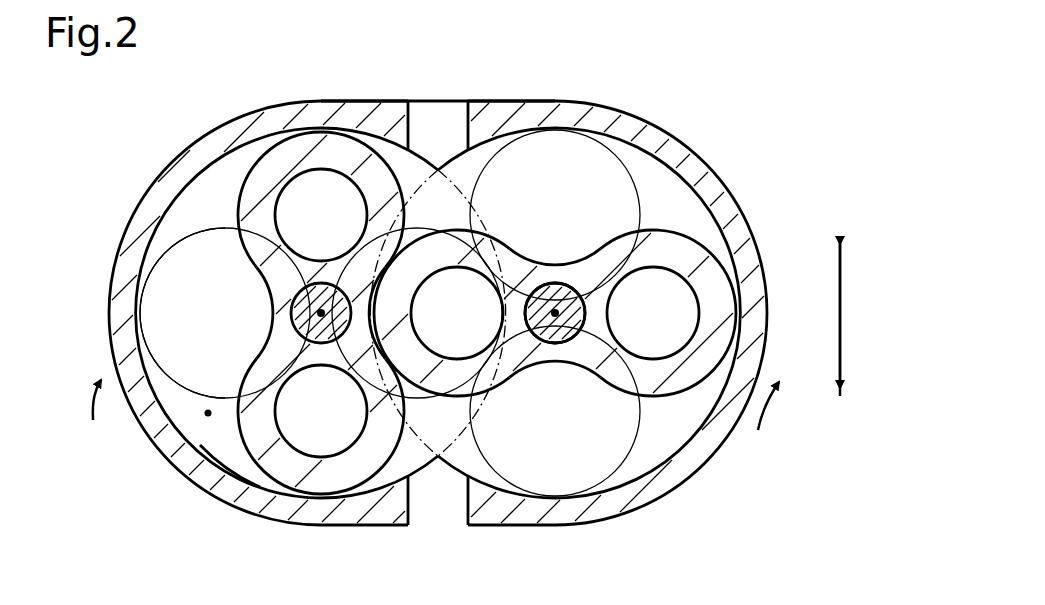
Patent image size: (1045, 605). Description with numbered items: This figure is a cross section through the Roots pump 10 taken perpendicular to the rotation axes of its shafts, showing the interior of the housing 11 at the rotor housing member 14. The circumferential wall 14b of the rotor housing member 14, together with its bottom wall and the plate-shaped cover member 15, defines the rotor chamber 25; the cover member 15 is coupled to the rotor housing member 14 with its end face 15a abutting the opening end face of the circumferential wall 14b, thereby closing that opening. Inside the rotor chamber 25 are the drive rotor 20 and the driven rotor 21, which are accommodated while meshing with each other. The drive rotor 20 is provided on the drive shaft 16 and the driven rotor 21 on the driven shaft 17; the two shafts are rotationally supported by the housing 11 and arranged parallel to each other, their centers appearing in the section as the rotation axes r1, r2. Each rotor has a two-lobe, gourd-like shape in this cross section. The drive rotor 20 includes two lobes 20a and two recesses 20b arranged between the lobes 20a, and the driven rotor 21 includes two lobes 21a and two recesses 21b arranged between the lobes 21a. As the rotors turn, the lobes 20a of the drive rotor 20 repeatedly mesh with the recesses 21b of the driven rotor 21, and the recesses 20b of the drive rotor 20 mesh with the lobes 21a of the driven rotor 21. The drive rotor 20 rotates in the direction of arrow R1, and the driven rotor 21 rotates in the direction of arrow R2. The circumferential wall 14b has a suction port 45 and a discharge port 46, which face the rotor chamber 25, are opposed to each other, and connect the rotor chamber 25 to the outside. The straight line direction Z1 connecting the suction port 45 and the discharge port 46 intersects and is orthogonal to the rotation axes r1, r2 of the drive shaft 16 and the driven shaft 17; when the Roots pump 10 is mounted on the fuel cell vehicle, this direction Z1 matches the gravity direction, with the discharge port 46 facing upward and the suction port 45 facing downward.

The Roots pump 10 is at (191, 96).
The housing 11 is at (669, 131).
The rotor housing member 14 is at (152, 187).
The circumferential wall 14b is at (116, 266).
The cover member 15 is at (662, 443).
The end face 15a is at (232, 470).
The drive shaft 16 is at (324, 343).
The driven shaft 17 is at (537, 343).
The drive rotor 20 is at (250, 192).
The lobes 20a is at (331, 131).
The recesses 20b is at (272, 309).
The driven rotor 21 is at (696, 240).
The lobes 21a is at (372, 300).
The recesses 21b is at (555, 263).
The rotor chamber 25 is at (208, 413).
The suction port 45 is at (437, 510).
The discharge port 46 is at (437, 114).
The rotation axis r1 is at (274, 337).
The rotation axis r2 is at (586, 315).
The arrow R1 is at (79, 405).
The arrow R2 is at (768, 404).
The straight line direction Z1 is at (845, 312).